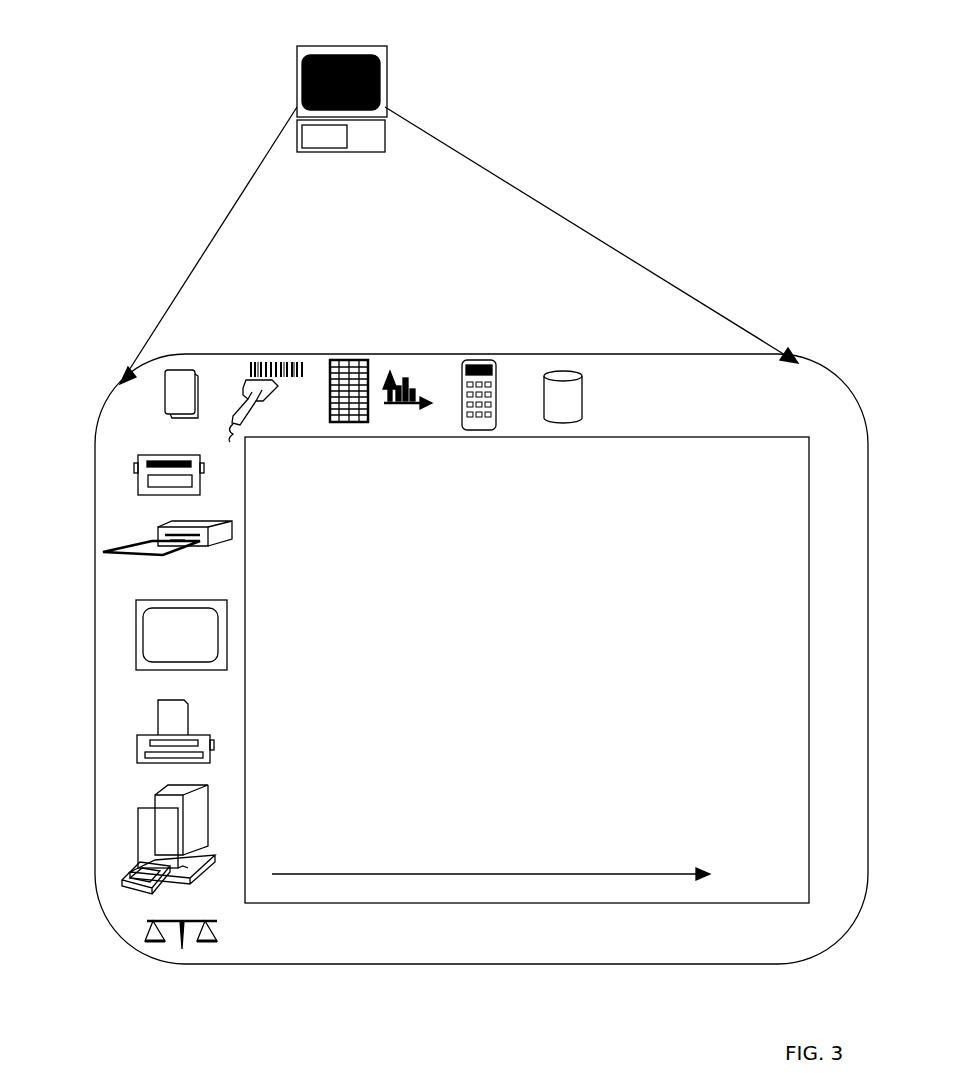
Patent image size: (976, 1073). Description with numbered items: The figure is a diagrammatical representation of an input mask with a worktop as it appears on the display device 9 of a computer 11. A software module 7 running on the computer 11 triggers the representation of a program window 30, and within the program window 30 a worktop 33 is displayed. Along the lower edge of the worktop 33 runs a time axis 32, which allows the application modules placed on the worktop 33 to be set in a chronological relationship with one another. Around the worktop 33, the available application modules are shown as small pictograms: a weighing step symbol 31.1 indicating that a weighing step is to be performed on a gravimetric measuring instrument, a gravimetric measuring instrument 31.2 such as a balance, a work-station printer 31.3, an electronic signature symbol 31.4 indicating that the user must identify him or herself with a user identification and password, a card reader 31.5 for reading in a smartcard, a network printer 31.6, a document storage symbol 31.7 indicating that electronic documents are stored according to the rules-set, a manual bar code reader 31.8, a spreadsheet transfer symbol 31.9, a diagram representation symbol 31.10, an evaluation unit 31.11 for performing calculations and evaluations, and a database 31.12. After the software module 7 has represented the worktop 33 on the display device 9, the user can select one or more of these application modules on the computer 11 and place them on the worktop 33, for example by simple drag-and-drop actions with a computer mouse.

The software module 7 is at (298, 138).
The display device 9 is at (383, 64).
The computer 11 is at (385, 131).
The program window 30 is at (383, 955).
The weighing step symbol 31.1 is at (152, 936).
The gravimetric measuring instrument 31.2 is at (142, 835).
The work-station printer 31.3 is at (137, 748).
The electronic signature symbol 31.4 is at (138, 638).
The card reader 31.5 is at (130, 548).
The network printer 31.6 is at (136, 470).
The document storage symbol 31.7 is at (180, 385).
The manual bar code reader 31.8 is at (247, 376).
The spreadsheet transfer symbol 31.9 is at (343, 372).
The diagram representation symbol 31.10 is at (393, 378).
The evaluation unit 31.11 is at (475, 380).
The database 31.12 is at (556, 378).
The time axis 32 is at (479, 875).
The worktop 33 is at (557, 903).